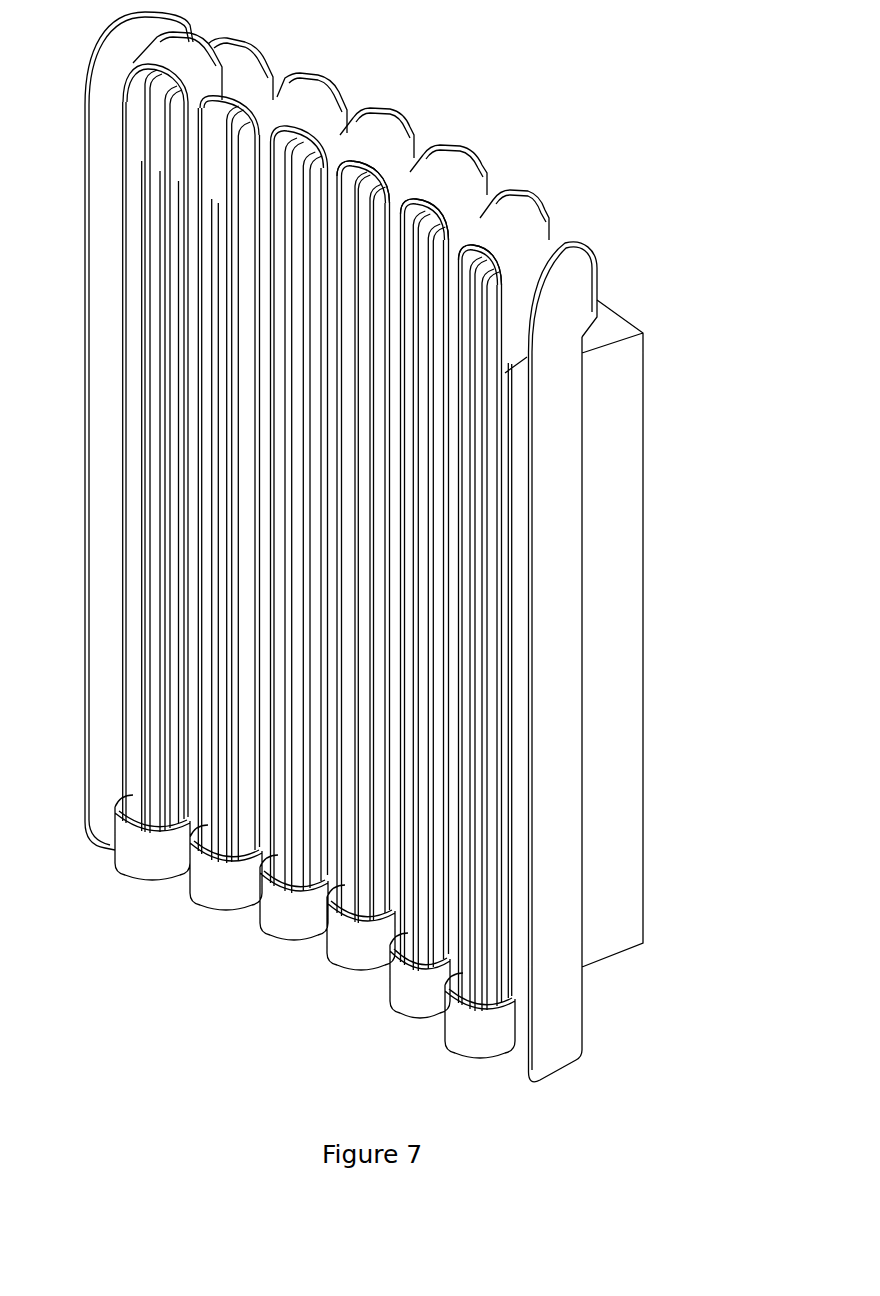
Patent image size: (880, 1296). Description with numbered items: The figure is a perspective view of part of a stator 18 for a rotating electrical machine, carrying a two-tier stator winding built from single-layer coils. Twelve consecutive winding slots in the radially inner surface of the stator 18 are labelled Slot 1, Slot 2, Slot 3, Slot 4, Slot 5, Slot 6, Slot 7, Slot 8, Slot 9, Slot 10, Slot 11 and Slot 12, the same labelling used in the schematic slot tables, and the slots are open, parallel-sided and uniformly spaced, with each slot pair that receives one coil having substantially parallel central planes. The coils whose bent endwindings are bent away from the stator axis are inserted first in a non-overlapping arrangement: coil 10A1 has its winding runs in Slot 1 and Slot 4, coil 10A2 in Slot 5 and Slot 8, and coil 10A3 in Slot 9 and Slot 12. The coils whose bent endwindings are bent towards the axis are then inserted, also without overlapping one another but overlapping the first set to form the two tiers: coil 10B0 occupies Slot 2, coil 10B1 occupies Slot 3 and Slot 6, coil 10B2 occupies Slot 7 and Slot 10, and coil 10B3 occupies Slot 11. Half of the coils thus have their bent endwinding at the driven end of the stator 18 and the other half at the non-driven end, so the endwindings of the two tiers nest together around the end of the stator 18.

The coil 10B3 is at (378, 118).
The coil 10A3 is at (415, 160).
The coil 10B2 is at (452, 158).
The coil 10A2 is at (478, 200).
The coil 10B1 is at (520, 207).
The coil 10A1 is at (535, 245).
The coil 10B0 is at (590, 300).
The winding slot Slot 1 is at (512, 395).
The winding slot Slot 2 is at (497, 424).
The winding slot Slot 3 is at (482, 452).
The winding slot Slot 4 is at (468, 481).
The winding slot Slot 5 is at (453, 509).
The winding slot Slot 6 is at (439, 538).
The winding slot Slot 7 is at (424, 567).
The winding slot Slot 8 is at (410, 595).
The winding slot Slot 9 is at (396, 624).
The winding slot Slot 10 is at (381, 652).
The winding slot Slot 11 is at (367, 681).
The winding slot Slot 12 is at (352, 710).
The stator 18 is at (608, 805).